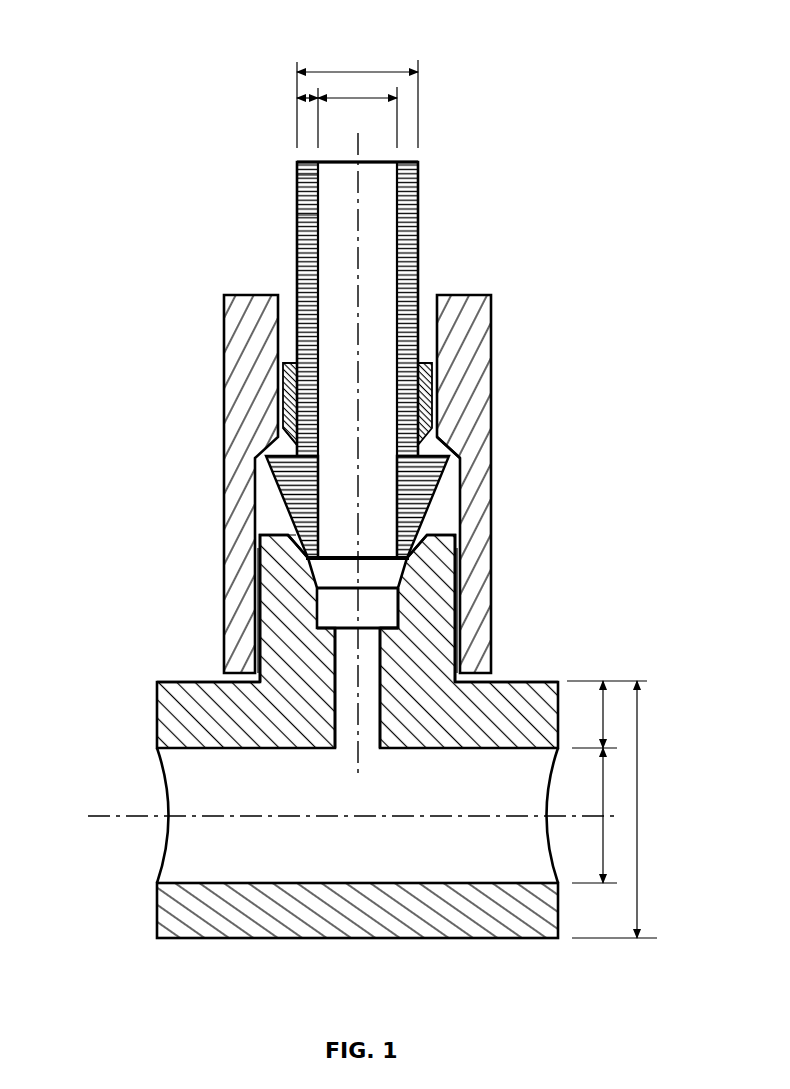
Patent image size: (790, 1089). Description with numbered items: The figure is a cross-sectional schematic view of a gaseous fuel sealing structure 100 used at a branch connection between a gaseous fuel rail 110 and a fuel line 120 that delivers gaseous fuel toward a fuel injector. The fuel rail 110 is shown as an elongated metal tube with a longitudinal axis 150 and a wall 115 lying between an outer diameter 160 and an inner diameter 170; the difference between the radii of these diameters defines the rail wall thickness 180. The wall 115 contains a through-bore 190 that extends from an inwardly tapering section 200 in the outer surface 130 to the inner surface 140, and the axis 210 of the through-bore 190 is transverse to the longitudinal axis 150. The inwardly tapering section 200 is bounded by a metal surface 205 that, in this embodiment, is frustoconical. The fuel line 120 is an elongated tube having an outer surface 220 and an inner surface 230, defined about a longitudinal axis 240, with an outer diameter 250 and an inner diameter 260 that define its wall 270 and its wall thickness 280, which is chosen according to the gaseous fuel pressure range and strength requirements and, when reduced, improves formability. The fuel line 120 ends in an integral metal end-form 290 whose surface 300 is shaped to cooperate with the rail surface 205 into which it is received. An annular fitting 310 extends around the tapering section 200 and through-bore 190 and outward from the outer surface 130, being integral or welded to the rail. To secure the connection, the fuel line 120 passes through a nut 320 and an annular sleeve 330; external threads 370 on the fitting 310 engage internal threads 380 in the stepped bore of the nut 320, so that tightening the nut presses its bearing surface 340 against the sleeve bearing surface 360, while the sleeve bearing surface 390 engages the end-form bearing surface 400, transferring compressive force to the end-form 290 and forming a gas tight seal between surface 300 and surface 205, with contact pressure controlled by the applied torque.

The sealing structure 100 is at (73, 332).
The fuel rail 110 is at (160, 700).
The wall 115 is at (515, 690).
The fuel line 120 is at (418, 188).
The outer surface 130 is at (175, 682).
The inner surface 140 is at (202, 803).
The longitudinal axis 150 is at (110, 818).
The outer diameter 160 is at (662, 868).
The inner diameter 170 is at (605, 792).
The wall thickness 180 is at (605, 717).
The through-bore 190 is at (376, 698).
The inwardly tapering section 200 is at (418, 572).
The surface 205 is at (320, 577).
The axis 210 is at (350, 750).
The outer surface 220 is at (298, 182).
The inner surface 230 is at (320, 162).
The longitudinal axis 240 is at (360, 217).
The outer diameter 250 is at (336, 70).
The inner diameter 260 is at (368, 97).
The wall 270 is at (300, 217).
The wall thickness 280 is at (316, 96).
The end-form 290 is at (417, 490).
The surface 300 is at (258, 540).
The annular fitting 310 is at (258, 603).
The nut 320 is at (252, 342).
The annular sleeve 330 is at (288, 393).
The bearing surface 340 is at (462, 458).
The bearing surface 360 is at (440, 417).
The external threads 370 is at (460, 607).
The internal threads 380 is at (452, 588).
The bearing surface 390 is at (278, 463).
The bearing surface 400 is at (283, 430).